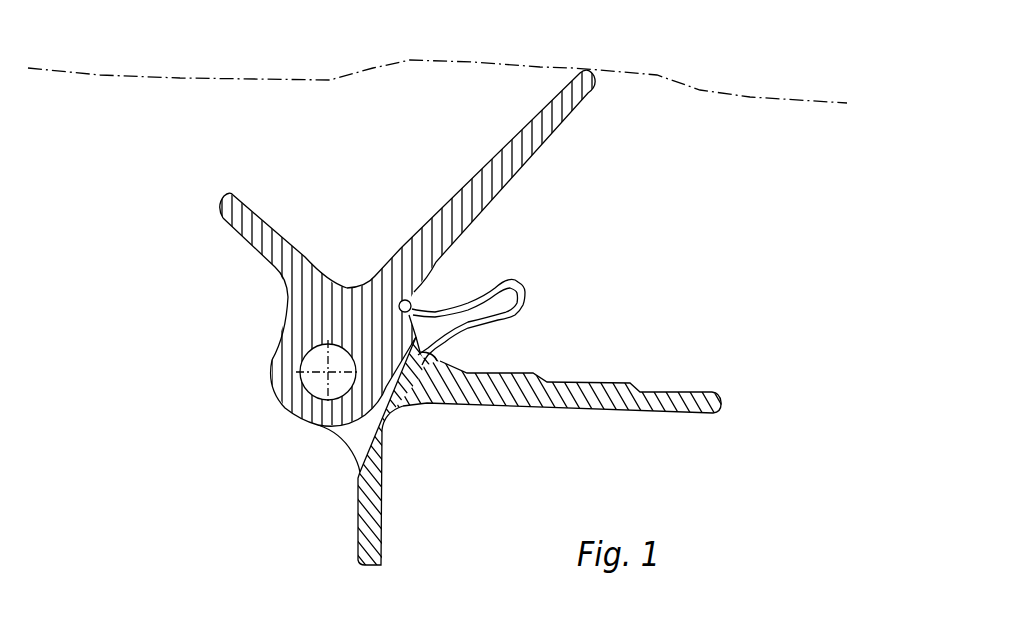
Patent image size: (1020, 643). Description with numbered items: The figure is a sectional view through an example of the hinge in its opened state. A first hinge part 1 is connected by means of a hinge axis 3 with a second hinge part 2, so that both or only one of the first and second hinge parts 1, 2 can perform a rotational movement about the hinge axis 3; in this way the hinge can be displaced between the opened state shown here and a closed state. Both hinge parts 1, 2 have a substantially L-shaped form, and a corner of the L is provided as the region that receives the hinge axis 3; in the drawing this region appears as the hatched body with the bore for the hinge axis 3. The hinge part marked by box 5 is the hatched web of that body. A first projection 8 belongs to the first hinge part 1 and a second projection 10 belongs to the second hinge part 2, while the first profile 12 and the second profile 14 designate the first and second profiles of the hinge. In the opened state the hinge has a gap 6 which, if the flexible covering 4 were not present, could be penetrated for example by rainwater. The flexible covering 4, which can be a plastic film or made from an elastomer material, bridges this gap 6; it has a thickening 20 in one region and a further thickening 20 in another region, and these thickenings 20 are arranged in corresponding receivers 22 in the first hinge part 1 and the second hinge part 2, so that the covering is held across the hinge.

The first hinge part 1 is at (220, 195).
The second hinge part 2 is at (605, 378).
The hinge axis 3 is at (338, 365).
The flexible covering 4 is at (526, 279).
The fifth position marker (body web) 5 is at (385, 350).
The gap 6 is at (417, 337).
The first projection 8 is at (223, 220).
The second projection 10 is at (350, 565).
The first profile 12 is at (588, 76).
The second profile 14 is at (720, 410).
The thickening 20 is at (405, 246).
The receiver 22 is at (410, 295).